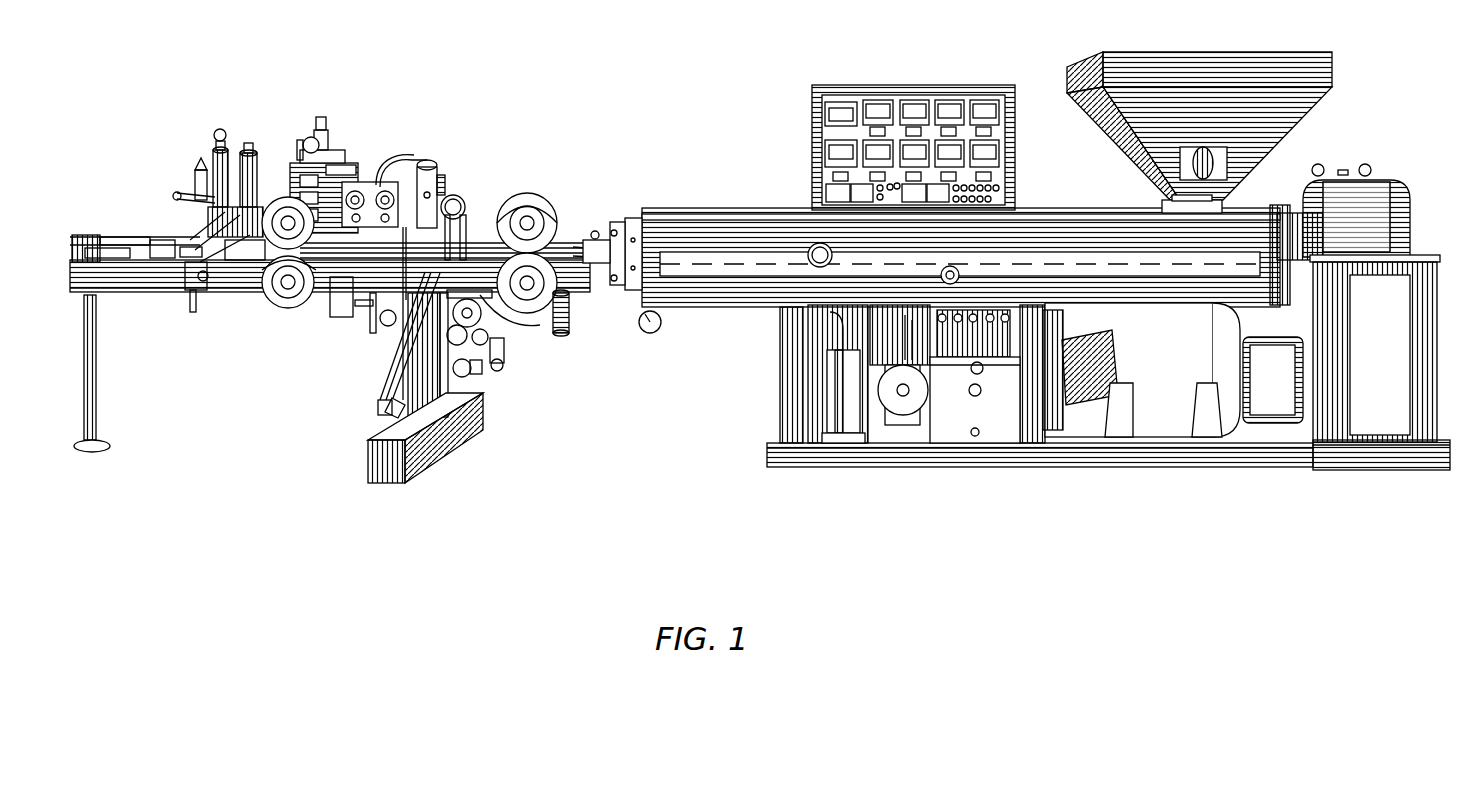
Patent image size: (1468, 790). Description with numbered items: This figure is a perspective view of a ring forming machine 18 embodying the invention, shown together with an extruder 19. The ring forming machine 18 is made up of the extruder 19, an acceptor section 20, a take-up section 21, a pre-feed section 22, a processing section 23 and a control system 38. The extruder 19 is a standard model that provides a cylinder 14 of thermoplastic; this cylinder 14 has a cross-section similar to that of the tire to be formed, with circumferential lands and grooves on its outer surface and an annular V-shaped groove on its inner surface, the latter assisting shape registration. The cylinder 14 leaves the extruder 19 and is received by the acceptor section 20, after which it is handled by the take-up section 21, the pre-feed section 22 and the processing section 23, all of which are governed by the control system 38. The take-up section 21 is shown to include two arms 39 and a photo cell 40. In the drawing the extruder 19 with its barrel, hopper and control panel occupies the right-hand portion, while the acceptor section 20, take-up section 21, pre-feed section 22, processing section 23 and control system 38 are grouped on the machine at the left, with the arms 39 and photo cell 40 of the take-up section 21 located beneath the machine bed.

The cylinder 14 is at (582, 230).
The ring forming machine 18 is at (353, 148).
The extruder 19 is at (676, 245).
The acceptor section 20 is at (570, 233).
The take-up section 21 is at (377, 405).
The pre-feed section 22 is at (263, 263).
The processing section 23 is at (205, 282).
The control system 38 is at (395, 168).
The arms 39 is at (415, 352).
The photo cell 40 is at (385, 410).